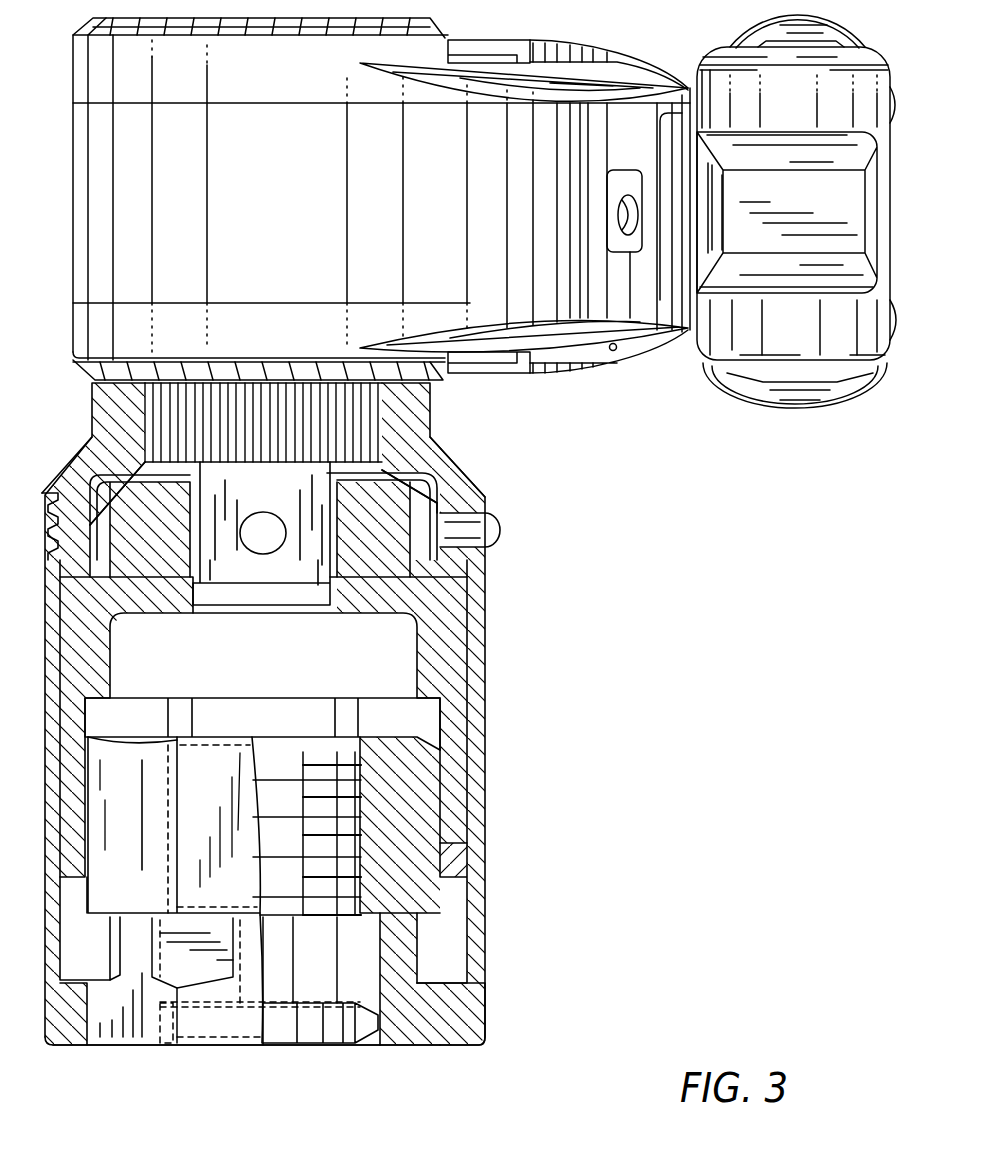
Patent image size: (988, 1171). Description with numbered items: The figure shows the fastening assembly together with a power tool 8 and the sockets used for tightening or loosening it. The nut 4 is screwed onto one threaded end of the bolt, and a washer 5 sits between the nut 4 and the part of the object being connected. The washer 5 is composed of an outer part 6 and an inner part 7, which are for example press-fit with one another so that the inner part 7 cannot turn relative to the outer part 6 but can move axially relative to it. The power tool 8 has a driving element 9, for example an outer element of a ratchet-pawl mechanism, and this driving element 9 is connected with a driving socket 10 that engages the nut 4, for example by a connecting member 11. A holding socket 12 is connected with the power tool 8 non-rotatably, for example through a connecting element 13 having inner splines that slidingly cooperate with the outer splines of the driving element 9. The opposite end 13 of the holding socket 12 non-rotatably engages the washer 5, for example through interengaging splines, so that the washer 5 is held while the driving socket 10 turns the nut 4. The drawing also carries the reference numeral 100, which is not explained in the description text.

The piston 4 is at (418, 843).
The valve assembly 5 is at (412, 1056).
The seal 6 is at (430, 1013).
The sleeve 7 is at (367, 1037).
The vent opening 8 is at (613, 351).
The knurled ring 9 is at (348, 410).
The housing 10 is at (443, 657).
The tab 11 is at (307, 583).
The cap nut 12 is at (487, 1007).
The adapter flange 13 is at (433, 470).
The seal ring 100 is at (407, 947).